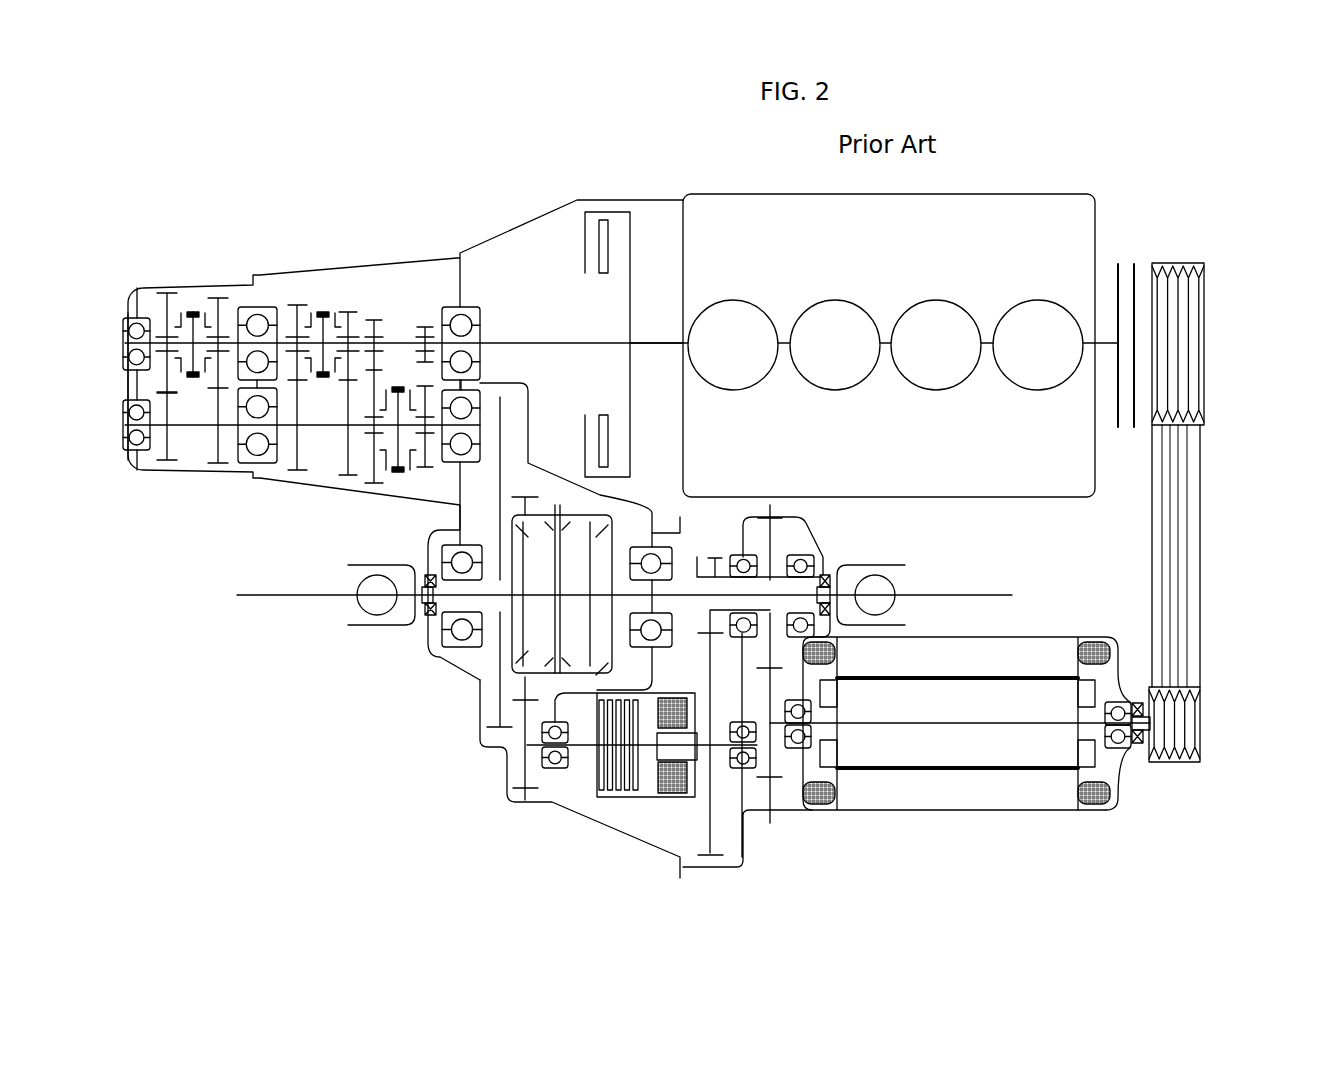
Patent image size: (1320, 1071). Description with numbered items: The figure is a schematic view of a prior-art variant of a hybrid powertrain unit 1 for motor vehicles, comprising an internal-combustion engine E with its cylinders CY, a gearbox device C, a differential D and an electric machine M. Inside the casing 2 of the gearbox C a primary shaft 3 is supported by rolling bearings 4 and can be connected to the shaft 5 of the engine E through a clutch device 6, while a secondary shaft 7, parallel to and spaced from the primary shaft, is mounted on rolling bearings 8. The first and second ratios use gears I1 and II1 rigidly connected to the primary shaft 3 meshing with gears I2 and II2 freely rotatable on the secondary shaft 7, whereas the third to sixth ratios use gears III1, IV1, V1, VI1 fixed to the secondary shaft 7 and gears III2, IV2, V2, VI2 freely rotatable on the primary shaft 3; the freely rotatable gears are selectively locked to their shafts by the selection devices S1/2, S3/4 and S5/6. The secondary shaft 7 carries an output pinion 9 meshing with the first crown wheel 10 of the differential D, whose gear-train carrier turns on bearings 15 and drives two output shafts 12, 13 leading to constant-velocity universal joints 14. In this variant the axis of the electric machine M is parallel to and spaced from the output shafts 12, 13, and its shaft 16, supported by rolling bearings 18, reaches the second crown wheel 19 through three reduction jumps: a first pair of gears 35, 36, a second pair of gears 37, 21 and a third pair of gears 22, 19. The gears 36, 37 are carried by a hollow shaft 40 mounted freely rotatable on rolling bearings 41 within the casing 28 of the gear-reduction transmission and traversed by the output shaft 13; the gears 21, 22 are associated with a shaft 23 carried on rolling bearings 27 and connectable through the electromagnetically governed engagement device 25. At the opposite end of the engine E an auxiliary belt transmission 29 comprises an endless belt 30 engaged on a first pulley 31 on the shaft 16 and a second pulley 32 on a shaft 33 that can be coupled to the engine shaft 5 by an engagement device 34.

The hybrid powertrain unit 1 is at (250, 152).
The casing of the gearbox 2 is at (428, 258).
The primary shaft 3 is at (522, 340).
The rolling bearings 4 is at (132, 330).
The shaft of the engine 5 is at (655, 340).
The clutch device 6 is at (632, 232).
The secondary shaft 7 is at (190, 430).
The rolling bearings 8 is at (128, 447).
The output pinion 9 is at (504, 405).
The first crown wheel 10 is at (503, 481).
The output shaft 12 is at (444, 600).
The output shaft 13 is at (800, 592).
The constant-velocity universal joints 14 is at (372, 602).
The bearings 15 is at (463, 558).
The shaft of the electric machine 16 is at (955, 724).
The rolling bearings 18 is at (801, 736).
The second crown wheel 19 is at (531, 500).
The gear 21 is at (708, 826).
The gear 22 is at (520, 777).
The shaft 23 is at (720, 750).
The engagement device 25 is at (630, 802).
The rolling bearings 27 is at (742, 729).
The casing of the gear-reduction transmission 28 is at (591, 822).
The auxiliary belt transmission 29 is at (1216, 558).
The endless belt 30 is at (1186, 637).
The first pulley 31 is at (1185, 762).
The second pulley 32 is at (1190, 320).
The shaft 33 is at (1137, 335).
The engagement device 34 is at (1128, 260).
The gear 35 is at (775, 770).
The gear 36 is at (772, 540).
The gear 37 is at (697, 545).
The hollow shaft 40 is at (820, 650).
The rolling bearings 41 is at (743, 560).
The gearbox device C is at (124, 345).
The cylinder CY is at (805, 301).
The differential D is at (484, 651).
The internal-combustion engine E is at (1092, 226).
The electric machine M is at (1006, 791).
The gear VI2 is at (160, 303).
The gear V2 is at (228, 315).
The gear IV2 is at (298, 303).
The gear III2 is at (348, 303).
The gear II1 is at (376, 317).
The gear I1 is at (426, 323).
The gear VI1 is at (165, 462).
The gear V1 is at (208, 465).
The gear IV1 is at (302, 398).
The gear III1 is at (339, 479).
The gear II2 is at (373, 486).
The gear I2 is at (416, 481).